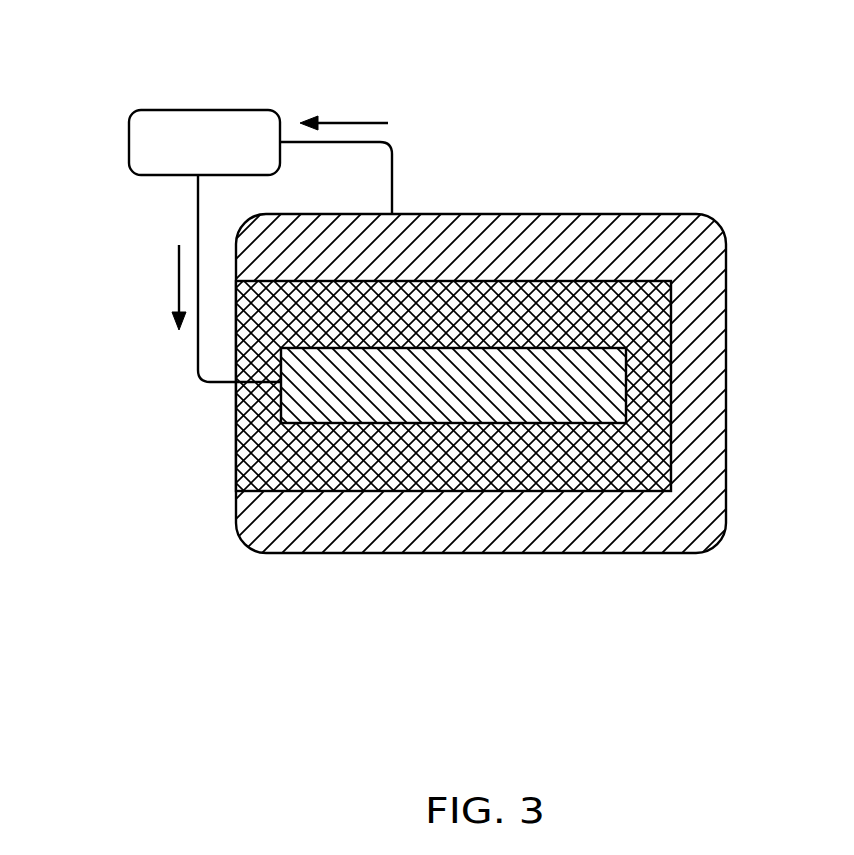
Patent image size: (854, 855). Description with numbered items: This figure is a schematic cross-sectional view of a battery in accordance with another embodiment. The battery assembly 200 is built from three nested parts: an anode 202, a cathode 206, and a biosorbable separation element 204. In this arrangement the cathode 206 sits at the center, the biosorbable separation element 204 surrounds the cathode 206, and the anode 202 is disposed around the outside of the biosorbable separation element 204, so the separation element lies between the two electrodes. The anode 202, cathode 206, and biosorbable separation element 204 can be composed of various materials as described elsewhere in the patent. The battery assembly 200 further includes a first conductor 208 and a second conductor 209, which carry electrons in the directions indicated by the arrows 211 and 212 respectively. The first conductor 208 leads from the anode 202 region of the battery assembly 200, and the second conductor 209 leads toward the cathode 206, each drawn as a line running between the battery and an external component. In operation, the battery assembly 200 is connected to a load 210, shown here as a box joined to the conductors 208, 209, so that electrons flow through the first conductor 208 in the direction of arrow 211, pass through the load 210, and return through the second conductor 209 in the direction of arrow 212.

The battery assembly 200 is at (473, 318).
The anode 202 is at (605, 523).
The biosorbable separation element 204 is at (263, 450).
The cathode 206 is at (607, 400).
The first conductor 208 is at (392, 178).
The second conductor 209 is at (197, 376).
The load 210 is at (145, 128).
The arrow 211 is at (338, 123).
The arrow 212 is at (177, 282).